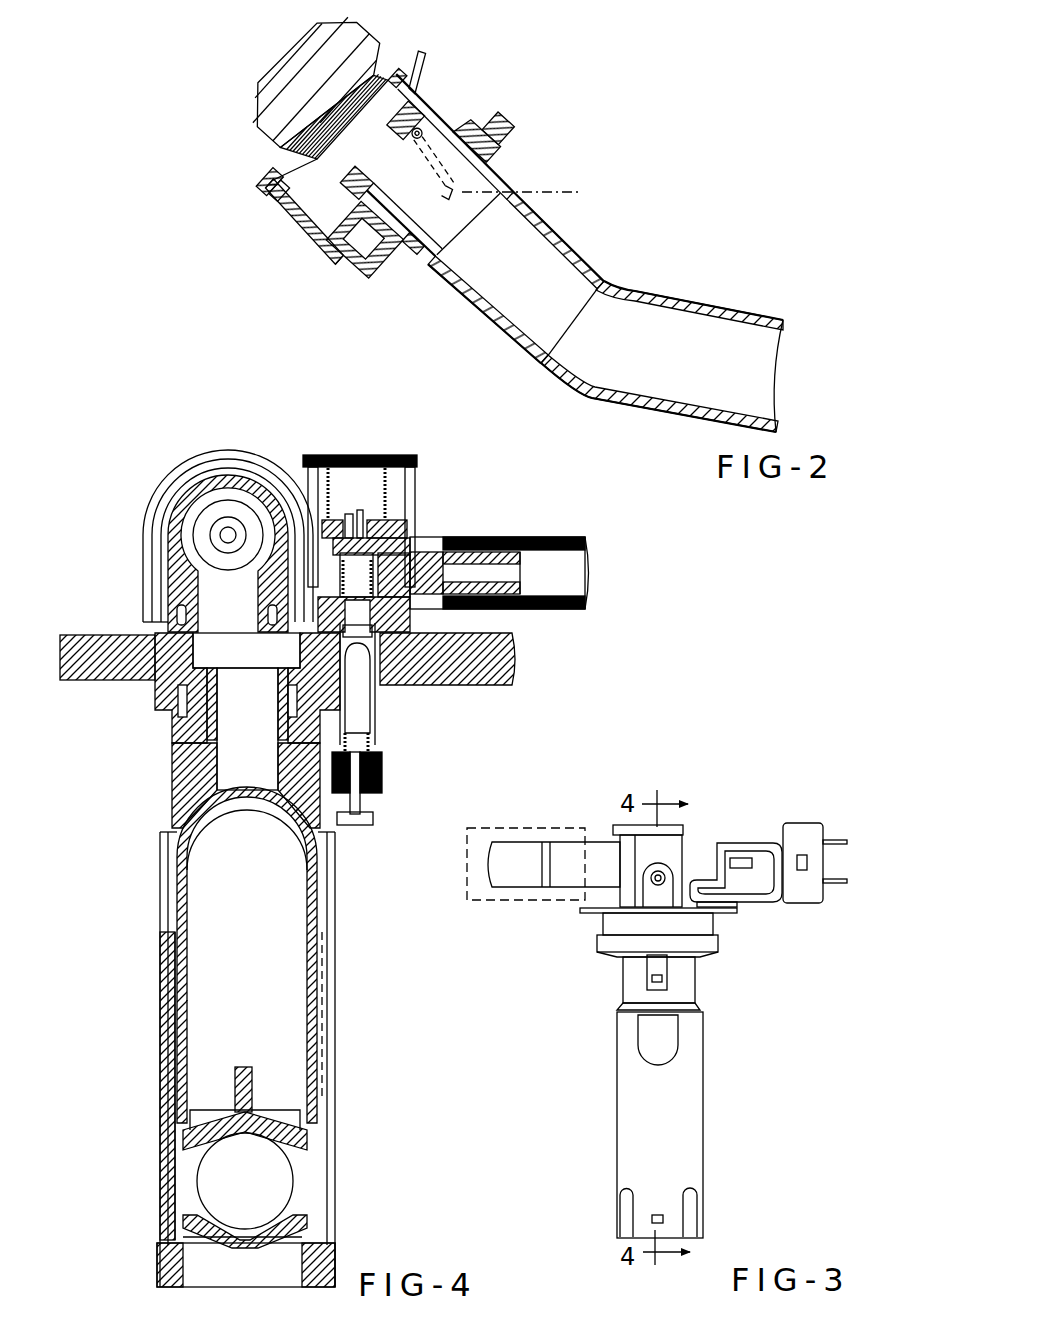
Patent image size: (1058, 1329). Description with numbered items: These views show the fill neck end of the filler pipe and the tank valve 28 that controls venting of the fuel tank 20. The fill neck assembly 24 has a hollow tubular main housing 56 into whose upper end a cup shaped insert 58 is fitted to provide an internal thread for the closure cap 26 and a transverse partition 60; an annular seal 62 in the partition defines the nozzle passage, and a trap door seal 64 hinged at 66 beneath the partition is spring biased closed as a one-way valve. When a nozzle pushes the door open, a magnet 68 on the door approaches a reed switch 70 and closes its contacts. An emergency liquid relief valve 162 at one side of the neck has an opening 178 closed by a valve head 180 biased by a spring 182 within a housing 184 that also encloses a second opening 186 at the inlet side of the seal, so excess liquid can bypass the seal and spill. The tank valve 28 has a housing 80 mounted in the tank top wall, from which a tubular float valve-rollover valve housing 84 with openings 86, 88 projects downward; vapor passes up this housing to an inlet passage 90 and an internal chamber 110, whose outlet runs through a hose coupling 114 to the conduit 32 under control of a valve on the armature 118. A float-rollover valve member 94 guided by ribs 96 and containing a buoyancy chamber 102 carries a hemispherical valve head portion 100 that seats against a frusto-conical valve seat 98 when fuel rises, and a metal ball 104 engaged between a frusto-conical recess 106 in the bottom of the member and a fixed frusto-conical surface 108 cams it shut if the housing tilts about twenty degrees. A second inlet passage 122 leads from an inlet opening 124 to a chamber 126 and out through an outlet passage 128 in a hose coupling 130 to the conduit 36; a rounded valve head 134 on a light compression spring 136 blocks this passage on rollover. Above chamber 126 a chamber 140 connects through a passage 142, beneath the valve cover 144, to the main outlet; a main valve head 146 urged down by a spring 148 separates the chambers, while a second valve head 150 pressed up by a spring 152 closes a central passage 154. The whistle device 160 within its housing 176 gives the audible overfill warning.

In FIG. 4, the fuel tank 20 is at (507, 675).
In FIG. 2, the fill neck assembly 24 is at (527, 47).
In FIG. 2, the closure cap 26 is at (293, 52).
In FIG. 4, the tank valve 28 is at (142, 484).
In FIG. 3, the tank valve 28 is at (783, 920).
In FIG. 3, the conduit 32 is at (530, 824).
In FIG. 4, the conduit 36 is at (577, 595).
In FIG. 2, the main housing 56 is at (415, 258).
In FIG. 2, the cup shaped insert 58 is at (375, 67).
In FIG. 2, the partition 60 is at (413, 97).
In FIG. 2, the annular seal 62 is at (290, 185).
In FIG. 2, the trap door seal 64 is at (400, 165).
In FIG. 2, the hinge 66 is at (425, 122).
In FIG. 2, the magnet 68 is at (373, 184).
In FIG. 2, the reed switch 70 is at (508, 140).
In FIG. 4, the housing 80 is at (300, 452).
In FIG. 3, the housing 80 is at (603, 924).
In FIG. 4, the float valve-rollover valve housing 84 is at (158, 959).
In FIG. 3, the float valve-rollover valve housing 84 is at (700, 1105).
In FIG. 4, the openings 86 is at (160, 867).
In FIG. 3, the openings 86 is at (663, 1034).
In FIG. 3, the openings 88 is at (620, 1210).
In FIG. 4, the inlet passage 90 is at (213, 594).
In FIG. 4, the float-rollover valve member 94 is at (313, 904).
In FIG. 4, the ribs 96 is at (180, 1010).
In FIG. 4, the valve seat 98 is at (183, 824).
In FIG. 4, the valve head portion 100 is at (248, 797).
In FIG. 4, the buoyancy chamber 102 is at (262, 977).
In FIG. 4, the ball 104 is at (283, 1187).
In FIG. 4, the valve plate 106 is at (197, 1150).
In FIG. 4, the frusto-conical surface 108 is at (193, 1200).
In FIG. 4, the internal chamber 110 is at (190, 522).
In FIG. 3, the hose coupling 114 is at (545, 879).
In FIG. 4, the armature 118 is at (222, 520).
In FIG. 4, the inlet passage 122 is at (360, 604).
In FIG. 4, the inlet opening 124 is at (380, 730).
In FIG. 4, the chamber 126 is at (413, 565).
In FIG. 4, the outlet passage 128 is at (405, 445).
In FIG. 4, the hose coupling 130 is at (493, 560).
In FIG. 4, the valve head 134 is at (390, 634).
In FIG. 4, the compression spring 136 is at (360, 697).
In FIG. 4, the chamber 140 is at (343, 484).
In FIG. 4, the passage 142 is at (320, 580).
In FIG. 4, the valve cover 144 is at (350, 507).
In FIG. 4, the main valve head 146 is at (398, 537).
In FIG. 4, the spring 148 is at (313, 477).
In FIG. 4, the second valve head 150 is at (383, 487).
In FIG. 4, the spring 152 is at (382, 565).
In FIG. 4, the passage 154 is at (402, 489).
In FIG. 3, the whistle device 160 is at (750, 854).
In FIG. 2, the emergency liquid relief valve 162 is at (270, 234).
In FIG. 3, the housing 176 is at (703, 847).
In FIG. 2, the opening 178 is at (403, 237).
In FIG. 2, the valve head 180 is at (340, 245).
In FIG. 2, the spring 182 is at (312, 230).
In FIG. 2, the housing 184 is at (357, 250).
In FIG. 2, the second opening 186 is at (280, 170).